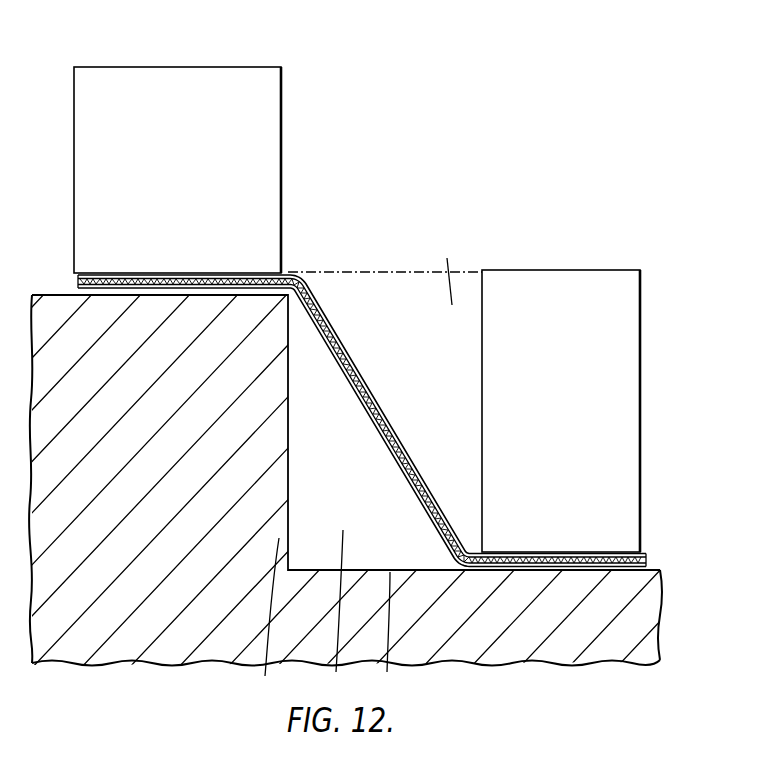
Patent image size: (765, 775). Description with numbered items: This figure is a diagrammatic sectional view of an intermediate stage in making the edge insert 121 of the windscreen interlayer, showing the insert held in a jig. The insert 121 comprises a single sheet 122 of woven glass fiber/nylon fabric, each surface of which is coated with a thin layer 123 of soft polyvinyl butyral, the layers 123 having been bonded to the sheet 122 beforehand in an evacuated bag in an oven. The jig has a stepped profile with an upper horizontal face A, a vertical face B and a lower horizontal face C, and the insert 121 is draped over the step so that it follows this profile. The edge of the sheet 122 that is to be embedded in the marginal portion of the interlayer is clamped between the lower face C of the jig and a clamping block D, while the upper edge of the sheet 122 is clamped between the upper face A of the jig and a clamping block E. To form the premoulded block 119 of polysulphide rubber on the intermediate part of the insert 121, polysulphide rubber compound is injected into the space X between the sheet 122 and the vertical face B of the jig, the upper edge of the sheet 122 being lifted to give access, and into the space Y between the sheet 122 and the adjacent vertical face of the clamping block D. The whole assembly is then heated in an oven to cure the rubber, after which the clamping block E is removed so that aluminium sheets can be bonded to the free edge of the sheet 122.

The upper horizontal face A is at (62, 295).
The vertical face B is at (262, 615).
The lower horizontal face C is at (379, 632).
The clamping block D is at (617, 312).
The clamping block E is at (272, 127).
The space X is at (336, 611).
The space Y is at (445, 270).
The block of polysulphide rubber 119 is at (387, 306).
The edge insert 121 is at (362, 403).
The sheet of woven glass fiber/nylon fabric 122 is at (368, 389).
The layer of soft polyvinyl butyral 123 is at (393, 428).